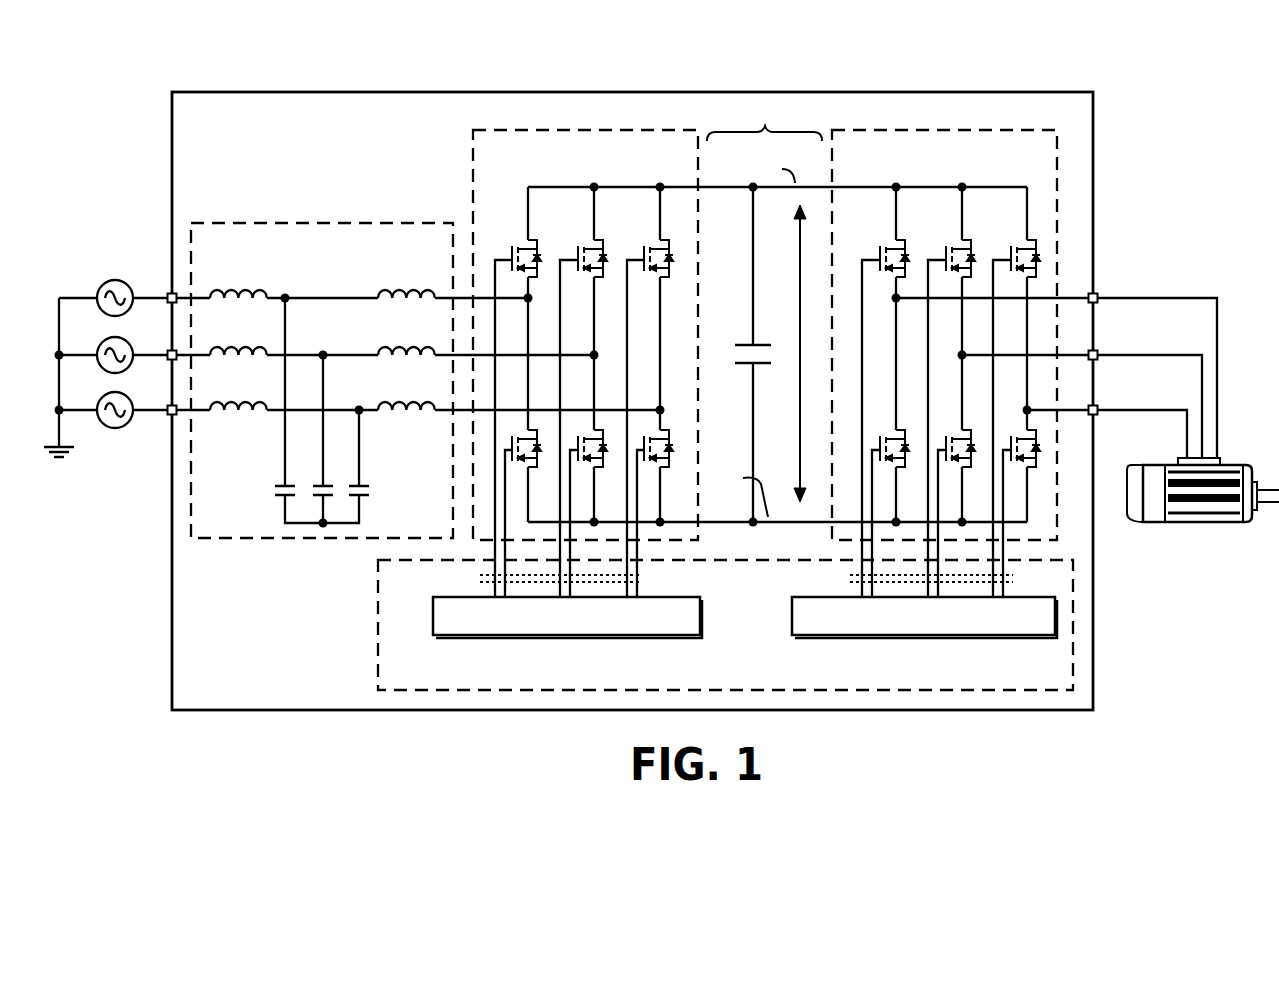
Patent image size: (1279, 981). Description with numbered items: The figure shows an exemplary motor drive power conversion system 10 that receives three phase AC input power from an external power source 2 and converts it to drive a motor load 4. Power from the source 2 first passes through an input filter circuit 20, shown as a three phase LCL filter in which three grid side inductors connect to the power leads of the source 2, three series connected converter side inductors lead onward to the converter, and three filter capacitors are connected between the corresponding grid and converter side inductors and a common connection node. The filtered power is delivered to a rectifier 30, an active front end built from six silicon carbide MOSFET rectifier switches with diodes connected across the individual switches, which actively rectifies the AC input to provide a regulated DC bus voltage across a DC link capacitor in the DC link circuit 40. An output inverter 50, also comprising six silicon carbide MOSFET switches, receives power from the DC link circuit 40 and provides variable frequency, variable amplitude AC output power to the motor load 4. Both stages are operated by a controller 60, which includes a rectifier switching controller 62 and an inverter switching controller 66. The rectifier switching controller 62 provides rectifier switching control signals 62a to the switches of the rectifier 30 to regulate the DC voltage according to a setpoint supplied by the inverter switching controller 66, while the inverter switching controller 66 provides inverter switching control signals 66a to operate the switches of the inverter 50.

The power source 2 is at (95, 276).
The motor load 4 is at (1237, 465).
The motor drive power conversion system 10 is at (240, 92).
The input filter circuit 20 is at (322, 223).
The rectifier 30 is at (584, 130).
The DC link circuit 40 is at (764, 130).
The output inverter 50 is at (941, 130).
The controller 60 is at (375, 672).
The rectifier switching controller 62 is at (432, 618).
The rectifier switching control signal 62a is at (479, 579).
The inverter switching controller 66 is at (790, 618).
The inverter switching control signal 66a is at (849, 579).